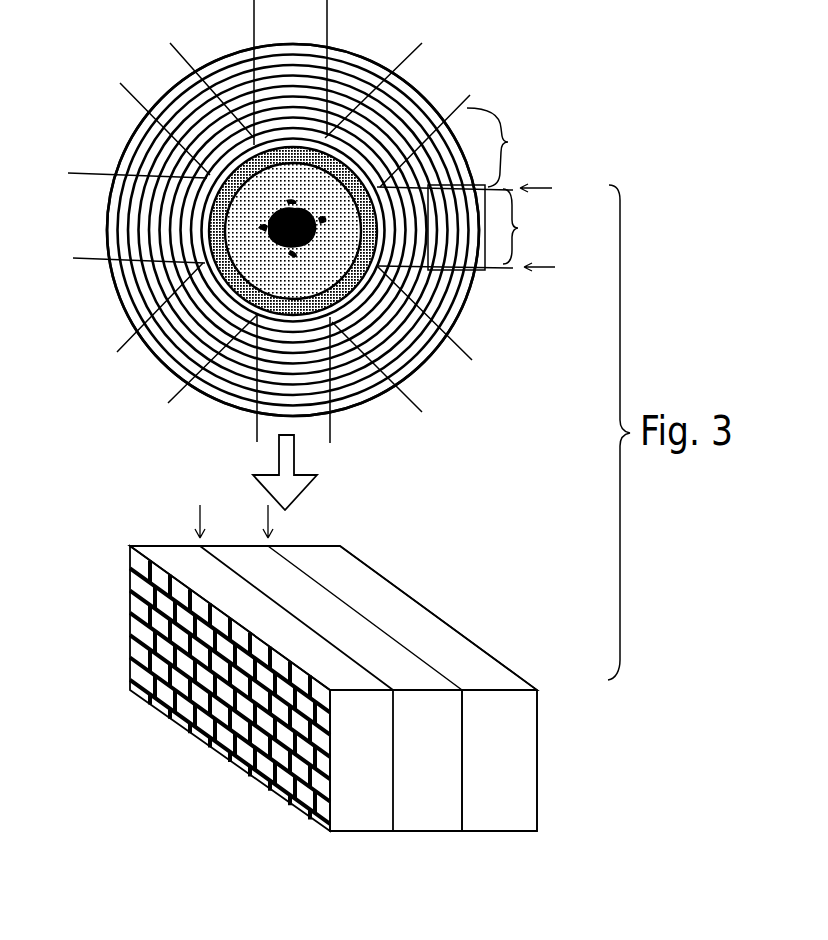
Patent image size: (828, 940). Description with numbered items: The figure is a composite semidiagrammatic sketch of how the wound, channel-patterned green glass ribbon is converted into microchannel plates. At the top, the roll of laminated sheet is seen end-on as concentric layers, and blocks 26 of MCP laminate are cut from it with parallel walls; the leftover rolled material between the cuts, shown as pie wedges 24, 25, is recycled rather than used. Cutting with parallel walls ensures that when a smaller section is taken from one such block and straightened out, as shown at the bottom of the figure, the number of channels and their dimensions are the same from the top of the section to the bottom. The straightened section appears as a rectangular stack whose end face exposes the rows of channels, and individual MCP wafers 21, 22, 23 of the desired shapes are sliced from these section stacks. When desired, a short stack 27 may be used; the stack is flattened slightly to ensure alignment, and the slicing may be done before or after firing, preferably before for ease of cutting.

The MCP wafer 21 is at (162, 548).
The MCP wafer 22 is at (235, 550).
The MCP wafer 23 is at (352, 563).
The pie wedge 24 is at (508, 143).
The pie wedge 25 is at (365, 67).
The block 26 is at (427, 375).
The short stack 27 is at (497, 234).